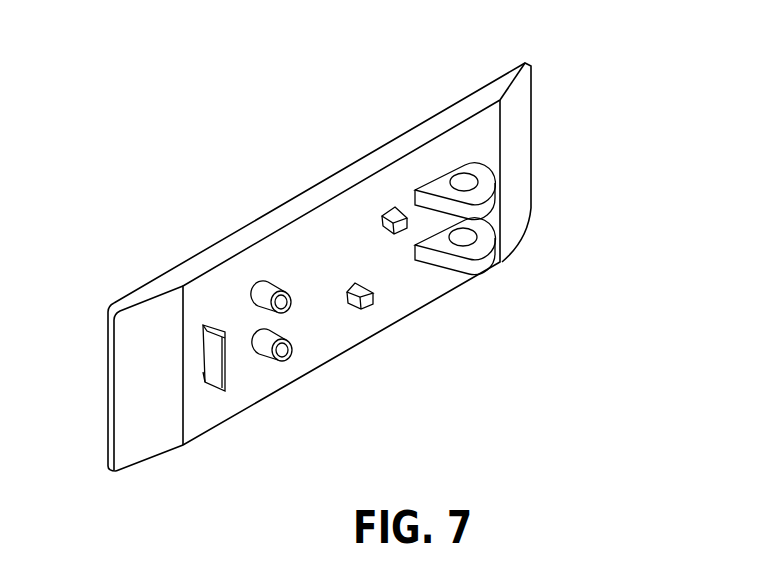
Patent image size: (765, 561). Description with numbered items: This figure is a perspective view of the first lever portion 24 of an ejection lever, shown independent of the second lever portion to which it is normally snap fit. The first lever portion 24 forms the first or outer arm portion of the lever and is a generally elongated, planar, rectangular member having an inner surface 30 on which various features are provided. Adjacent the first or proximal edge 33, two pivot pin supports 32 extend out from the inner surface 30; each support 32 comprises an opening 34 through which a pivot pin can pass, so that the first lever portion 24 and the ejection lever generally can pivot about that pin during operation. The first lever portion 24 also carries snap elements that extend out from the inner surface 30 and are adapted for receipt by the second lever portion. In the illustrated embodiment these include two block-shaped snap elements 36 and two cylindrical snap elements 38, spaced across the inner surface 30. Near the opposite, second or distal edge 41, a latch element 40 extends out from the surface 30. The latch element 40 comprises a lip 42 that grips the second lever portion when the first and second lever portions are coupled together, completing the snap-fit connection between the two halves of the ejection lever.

The first lever portion 24 is at (190, 157).
The inner surface 30 is at (320, 345).
The pivot pin supports 32 is at (440, 183).
The proximal edge 33 is at (542, 93).
The opening 34 is at (463, 177).
The block-shaped snap elements 36 is at (393, 203).
The cylindrical snap elements 38 is at (267, 280).
The latch element 40 is at (206, 372).
The distal edge 41 is at (92, 453).
The lip 42 is at (227, 330).